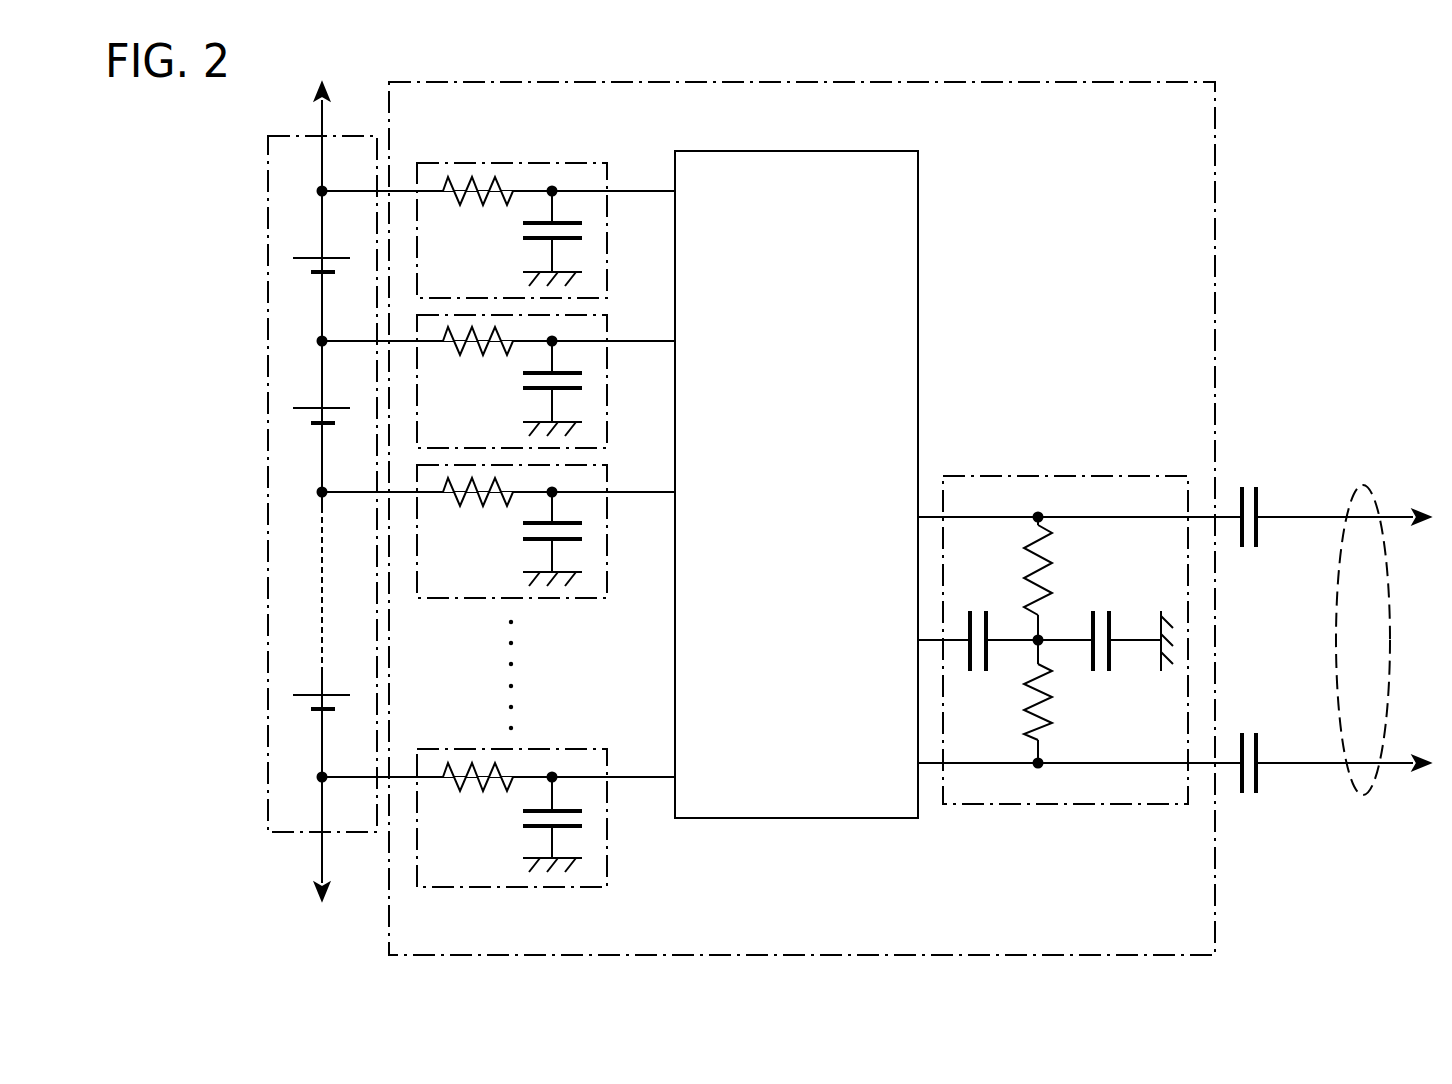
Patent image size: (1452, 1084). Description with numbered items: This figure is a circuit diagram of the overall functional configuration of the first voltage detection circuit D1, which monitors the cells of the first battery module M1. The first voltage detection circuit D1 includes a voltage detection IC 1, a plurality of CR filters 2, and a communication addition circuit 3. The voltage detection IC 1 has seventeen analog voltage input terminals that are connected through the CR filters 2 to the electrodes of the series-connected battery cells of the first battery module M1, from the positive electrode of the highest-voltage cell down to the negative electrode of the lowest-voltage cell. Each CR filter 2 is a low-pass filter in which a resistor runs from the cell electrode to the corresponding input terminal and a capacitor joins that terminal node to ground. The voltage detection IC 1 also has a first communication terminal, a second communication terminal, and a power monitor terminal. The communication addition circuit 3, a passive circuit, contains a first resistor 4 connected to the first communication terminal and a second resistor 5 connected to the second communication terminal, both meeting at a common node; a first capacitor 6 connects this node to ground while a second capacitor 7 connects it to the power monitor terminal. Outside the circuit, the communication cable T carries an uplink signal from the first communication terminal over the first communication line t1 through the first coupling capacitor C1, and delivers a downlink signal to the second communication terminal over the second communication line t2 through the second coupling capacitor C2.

The voltage detection IC 1 is at (918, 298).
The CR filter 2 is at (607, 232).
The communication addition circuit 3 is at (1065, 599).
The first resistor 4 is at (1045, 712).
The second resistor 5 is at (1045, 585).
The first capacitor 6 is at (1111, 625).
The second capacitor 7 is at (988, 625).
The first battery module M1 is at (268, 490).
The first voltage detection circuit D1 is at (1215, 228).
The first coupling capacitor C1 is at (1258, 751).
The second coupling capacitor C2 is at (1258, 505).
The communication cable T is at (1360, 485).
The first communication line t1 is at (1305, 766).
The second communication line t2 is at (1305, 520).